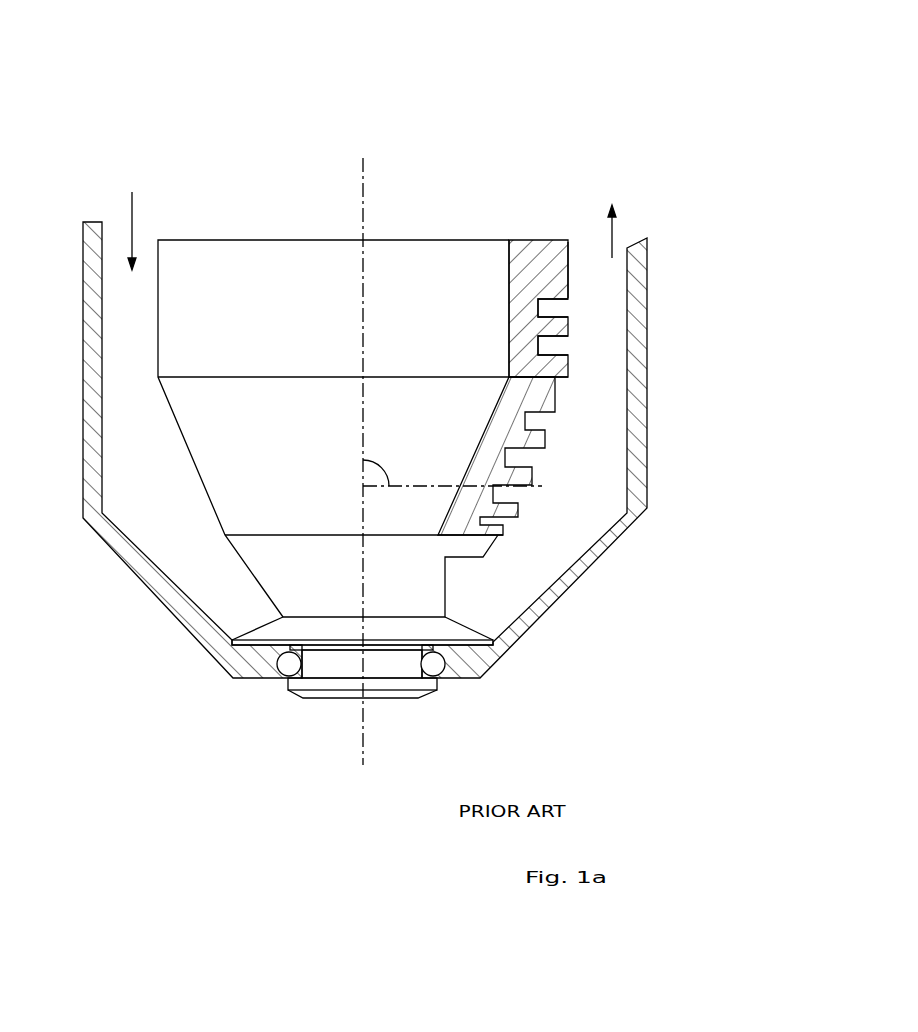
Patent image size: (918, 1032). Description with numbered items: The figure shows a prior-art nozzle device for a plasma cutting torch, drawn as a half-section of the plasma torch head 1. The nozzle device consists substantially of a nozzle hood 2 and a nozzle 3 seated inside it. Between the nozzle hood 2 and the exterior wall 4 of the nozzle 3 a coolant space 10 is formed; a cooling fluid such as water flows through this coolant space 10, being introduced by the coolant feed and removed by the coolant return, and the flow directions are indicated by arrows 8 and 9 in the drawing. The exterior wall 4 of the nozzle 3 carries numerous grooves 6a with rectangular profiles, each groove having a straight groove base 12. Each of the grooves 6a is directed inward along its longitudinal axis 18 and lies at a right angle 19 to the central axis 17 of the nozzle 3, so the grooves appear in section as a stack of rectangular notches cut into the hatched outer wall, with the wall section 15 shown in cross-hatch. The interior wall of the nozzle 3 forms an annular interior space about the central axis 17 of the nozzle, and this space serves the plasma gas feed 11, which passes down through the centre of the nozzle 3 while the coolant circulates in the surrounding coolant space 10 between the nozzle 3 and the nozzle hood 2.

The plasma torch head 1 is at (395, 107).
The nozzle hood 2 is at (636, 505).
The nozzle 3 is at (260, 268).
The exterior wall 4 is at (568, 263).
The grooves 6a is at (565, 308).
The gas flow direction (inlet) 8 is at (133, 210).
The gas flow direction (outlet) 9 is at (615, 224).
The coolant space 10 is at (523, 572).
The plasma gas feed 11 is at (458, 248).
The groove base 12 is at (563, 340).
The outer wall of body 15 is at (537, 250).
The central axis 17 is at (365, 196).
The longitudinal axis 18 is at (528, 486).
The right angle 19 is at (382, 468).